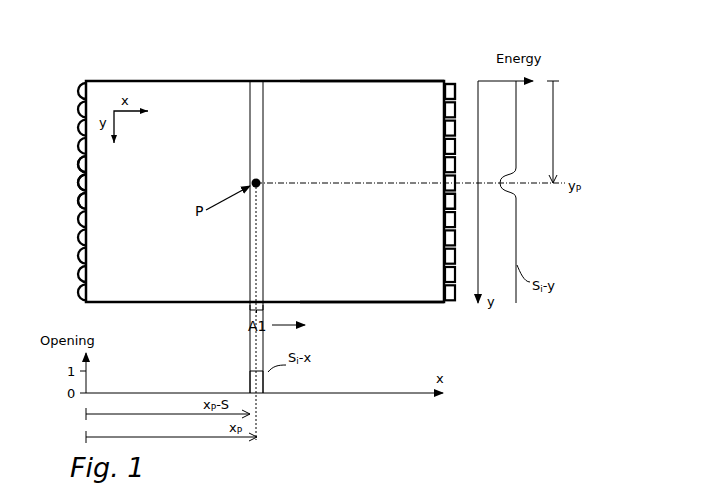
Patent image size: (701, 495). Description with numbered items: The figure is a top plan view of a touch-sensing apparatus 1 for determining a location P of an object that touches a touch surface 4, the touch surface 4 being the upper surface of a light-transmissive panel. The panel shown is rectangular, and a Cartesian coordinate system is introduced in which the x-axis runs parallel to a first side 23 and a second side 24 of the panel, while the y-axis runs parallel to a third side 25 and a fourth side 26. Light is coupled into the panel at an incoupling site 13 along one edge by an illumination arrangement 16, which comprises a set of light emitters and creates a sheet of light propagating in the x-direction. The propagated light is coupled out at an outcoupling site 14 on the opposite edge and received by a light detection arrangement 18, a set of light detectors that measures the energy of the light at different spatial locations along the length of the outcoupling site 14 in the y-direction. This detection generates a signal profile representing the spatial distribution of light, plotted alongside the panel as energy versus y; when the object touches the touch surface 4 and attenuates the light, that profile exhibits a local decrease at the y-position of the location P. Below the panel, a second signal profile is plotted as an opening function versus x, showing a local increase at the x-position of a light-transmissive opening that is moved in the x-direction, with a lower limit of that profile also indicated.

The touch-sensing apparatus 1 is at (484, 30).
The touch surface 4 is at (420, 118).
The incoupling site 13 is at (73, 138).
The outcoupling site 14 is at (452, 306).
The illumination arrangement 16 is at (81, 184).
The light detection arrangement 18 is at (455, 100).
The first side 23 is at (371, 83).
The second side 24 is at (384, 300).
The third side 25 is at (88, 196).
The fourth side 26 is at (442, 205).